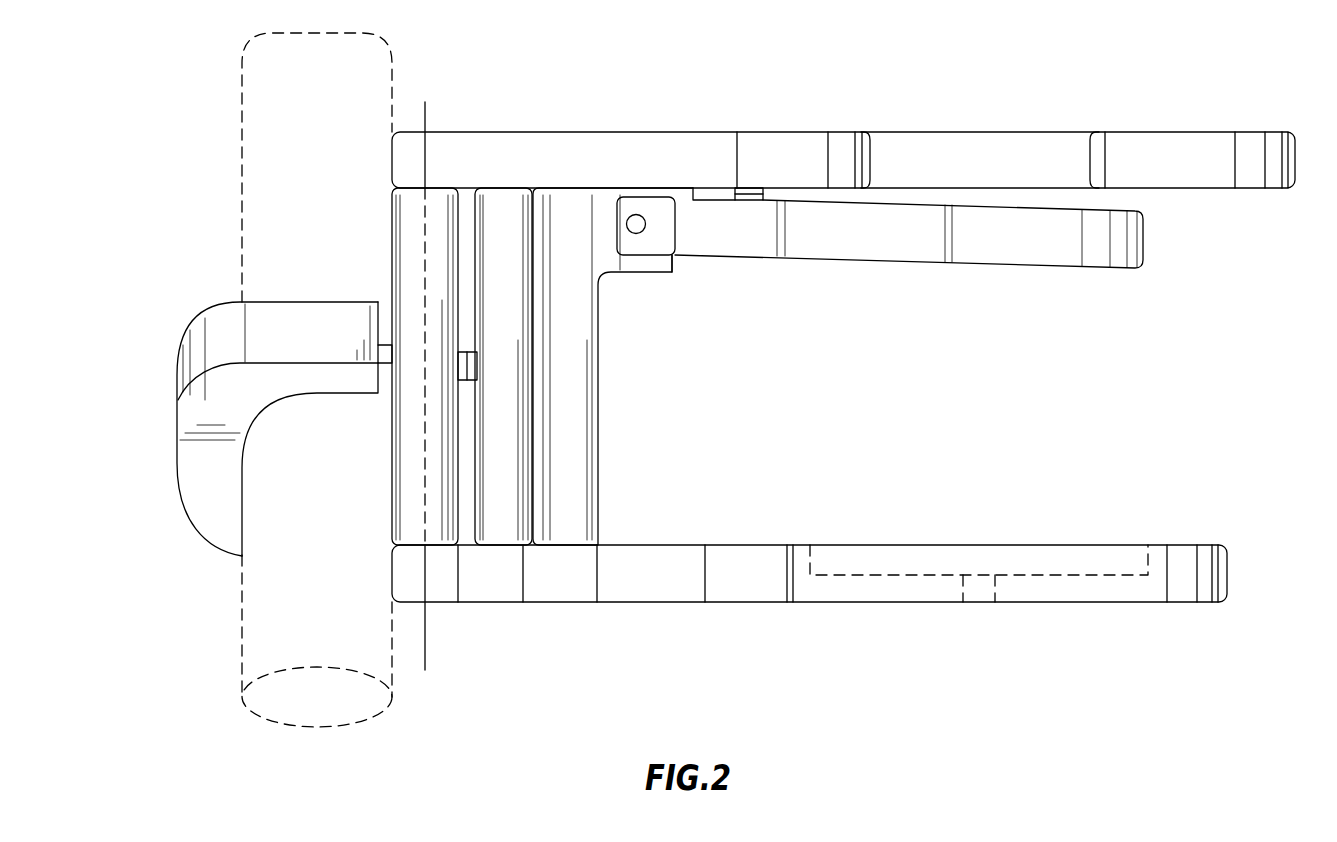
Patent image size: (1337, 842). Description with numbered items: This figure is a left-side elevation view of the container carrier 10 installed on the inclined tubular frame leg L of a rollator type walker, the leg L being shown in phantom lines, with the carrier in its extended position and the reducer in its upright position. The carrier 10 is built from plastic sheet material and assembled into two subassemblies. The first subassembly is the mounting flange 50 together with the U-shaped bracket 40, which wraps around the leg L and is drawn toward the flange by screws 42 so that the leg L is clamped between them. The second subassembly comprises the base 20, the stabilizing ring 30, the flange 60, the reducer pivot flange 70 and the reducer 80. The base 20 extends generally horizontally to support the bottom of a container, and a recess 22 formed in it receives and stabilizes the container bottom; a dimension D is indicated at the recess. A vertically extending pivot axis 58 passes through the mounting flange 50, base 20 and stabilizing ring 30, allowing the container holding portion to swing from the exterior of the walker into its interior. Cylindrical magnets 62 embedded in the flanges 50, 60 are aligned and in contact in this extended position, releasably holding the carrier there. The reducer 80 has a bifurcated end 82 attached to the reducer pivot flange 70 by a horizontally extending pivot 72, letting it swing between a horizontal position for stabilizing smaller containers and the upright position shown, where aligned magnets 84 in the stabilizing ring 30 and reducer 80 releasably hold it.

The container carrier 10 is at (814, 396).
The base 20 is at (1182, 543).
The recess 22 is at (1007, 555).
The stabilizing ring 30 is at (1215, 132).
The U-shaped bracket 40 is at (176, 394).
The screws 42 is at (388, 343).
The mounting flange 50 is at (407, 487).
The pivot axis 58 is at (427, 623).
The flange 60 is at (512, 203).
The magnets 62 is at (462, 370).
The reducer pivot flange 70 is at (566, 205).
The pivot 72 is at (635, 212).
The reducer 80 is at (842, 230).
The bifurcated end 82 is at (662, 235).
The magnets 84 is at (745, 190).
The frame leg L is at (280, 153).
The distance D is at (982, 590).